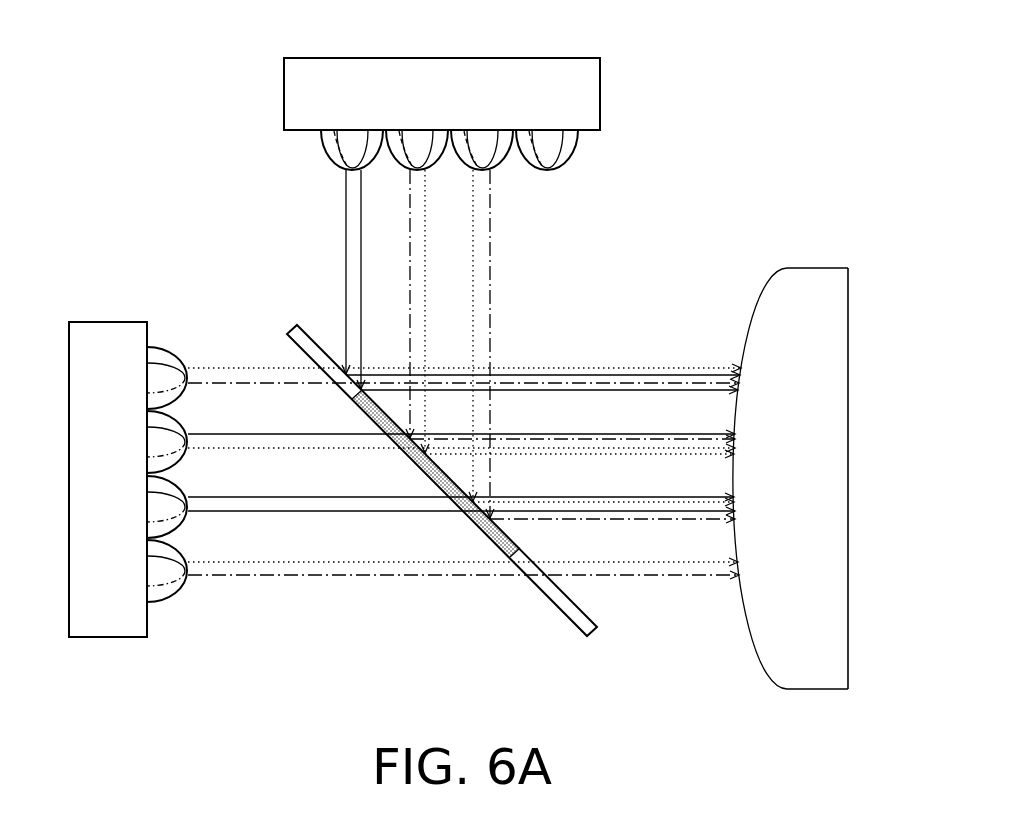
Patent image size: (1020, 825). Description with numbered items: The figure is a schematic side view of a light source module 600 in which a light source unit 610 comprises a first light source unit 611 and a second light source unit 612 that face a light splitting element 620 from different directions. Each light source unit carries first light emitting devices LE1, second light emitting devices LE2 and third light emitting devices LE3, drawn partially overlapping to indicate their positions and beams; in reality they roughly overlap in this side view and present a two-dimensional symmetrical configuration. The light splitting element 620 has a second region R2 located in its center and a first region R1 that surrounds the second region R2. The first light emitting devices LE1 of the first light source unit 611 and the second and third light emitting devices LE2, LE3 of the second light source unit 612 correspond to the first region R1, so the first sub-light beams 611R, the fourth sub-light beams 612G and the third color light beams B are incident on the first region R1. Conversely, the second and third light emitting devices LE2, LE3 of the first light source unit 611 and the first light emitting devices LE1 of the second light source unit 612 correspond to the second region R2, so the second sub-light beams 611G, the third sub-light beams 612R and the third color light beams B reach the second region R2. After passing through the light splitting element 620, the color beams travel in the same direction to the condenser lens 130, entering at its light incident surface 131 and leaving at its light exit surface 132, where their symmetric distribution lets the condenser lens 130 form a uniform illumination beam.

The light source module 600 is at (780, 730).
The light source unit 610 is at (761, 204).
The first light source unit 611 is at (600, 96).
The second light source unit 612 is at (106, 336).
The first sub-light beams 611R is at (346, 250).
The second sub-light beams 611G is at (410, 275).
The third sub-light beams 612R is at (298, 510).
The fourth sub-light beams 612G is at (278, 388).
The light splitting element 620 is at (546, 644).
The condenser lens 130 is at (805, 280).
The light incident surface 131 is at (754, 310).
The light exit surface 132 is at (850, 305).
The first light emitting devices LE1 is at (348, 168).
The second light emitting devices LE2 is at (410, 165).
The third light emitting devices LE3 is at (463, 162).
The third color light beams B is at (473, 280).
The first region R1 is at (330, 350).
The second region R2 is at (505, 552).